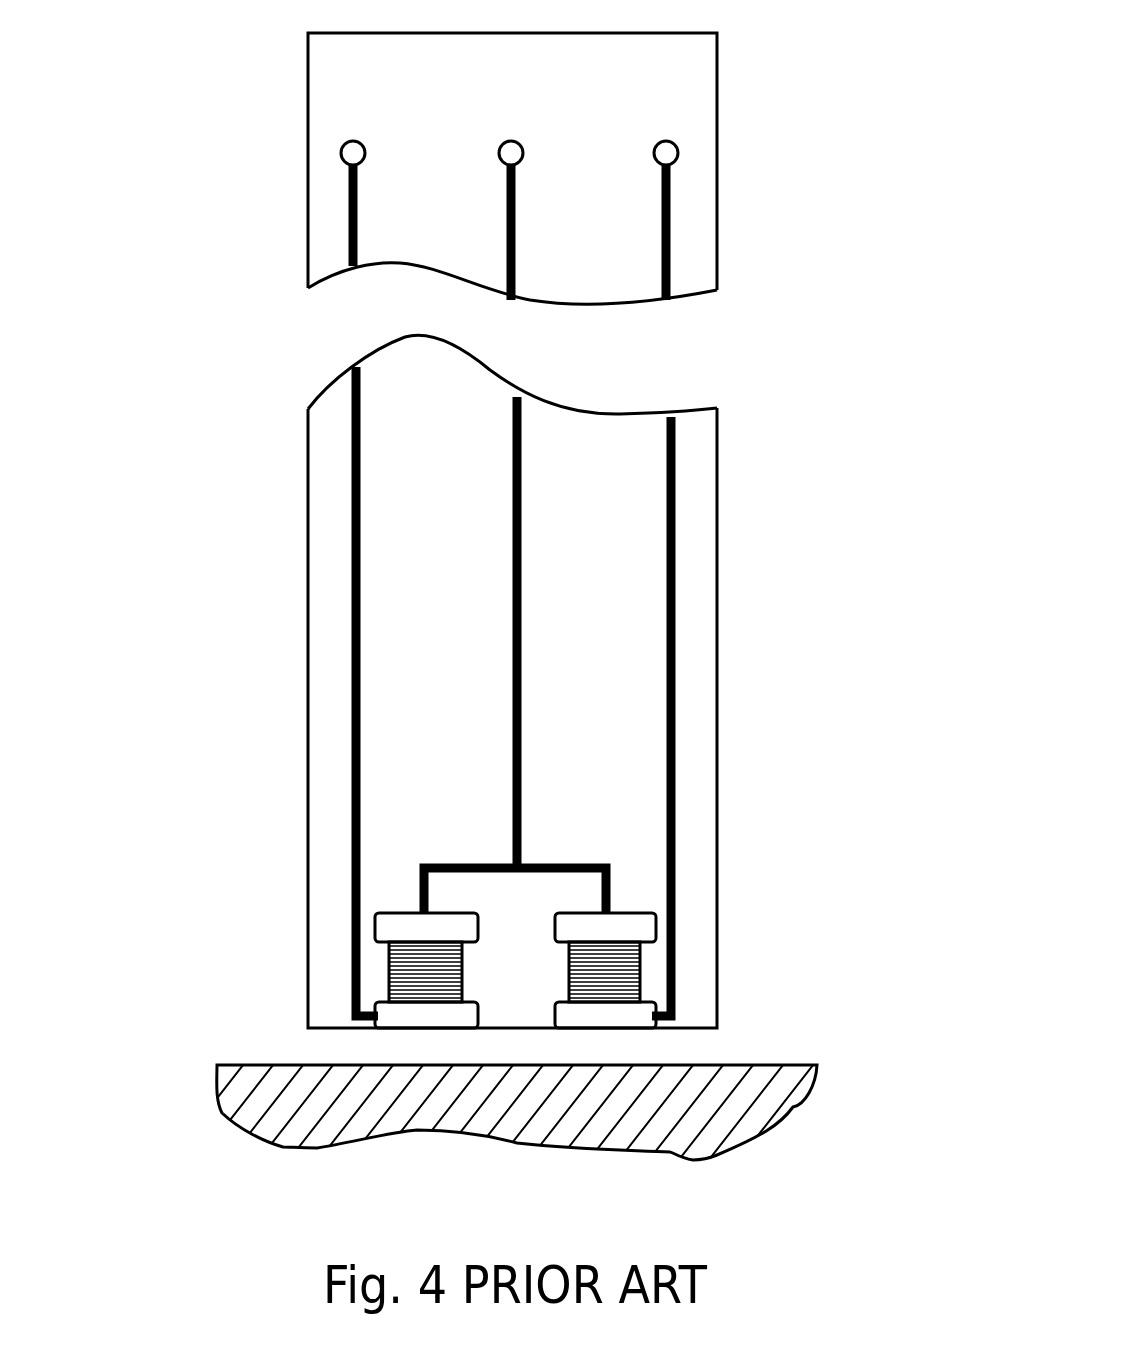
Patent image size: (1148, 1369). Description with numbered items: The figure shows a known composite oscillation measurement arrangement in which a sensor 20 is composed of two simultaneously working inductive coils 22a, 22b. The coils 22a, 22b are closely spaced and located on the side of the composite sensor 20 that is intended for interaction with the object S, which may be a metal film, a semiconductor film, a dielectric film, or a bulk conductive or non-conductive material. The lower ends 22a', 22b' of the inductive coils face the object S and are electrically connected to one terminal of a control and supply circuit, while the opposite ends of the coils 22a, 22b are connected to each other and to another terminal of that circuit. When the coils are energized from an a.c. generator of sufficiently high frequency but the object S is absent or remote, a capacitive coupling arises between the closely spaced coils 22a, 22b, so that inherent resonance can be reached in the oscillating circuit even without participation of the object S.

The sensor 20 is at (222, 270).
The inductive coil 22a is at (292, 848).
The inductive coil 22b is at (738, 848).
The lower end of inductive coil 22a' is at (292, 1015).
The lower end of inductive coil 22b' is at (743, 1015).
The object S is at (293, 1098).